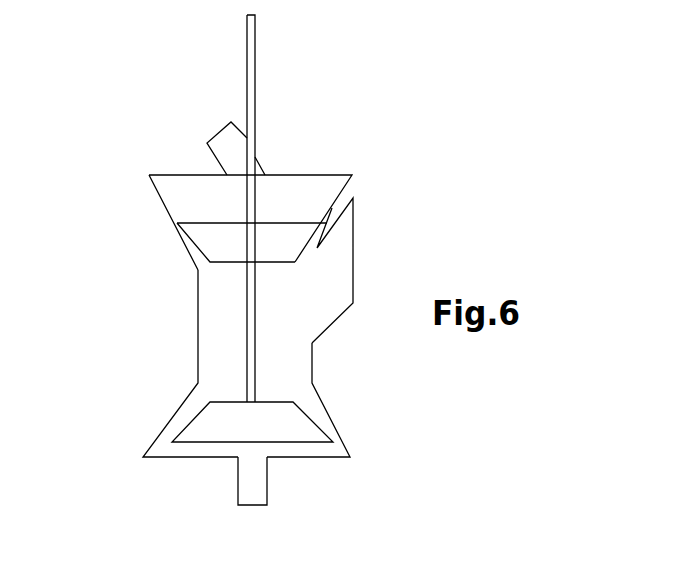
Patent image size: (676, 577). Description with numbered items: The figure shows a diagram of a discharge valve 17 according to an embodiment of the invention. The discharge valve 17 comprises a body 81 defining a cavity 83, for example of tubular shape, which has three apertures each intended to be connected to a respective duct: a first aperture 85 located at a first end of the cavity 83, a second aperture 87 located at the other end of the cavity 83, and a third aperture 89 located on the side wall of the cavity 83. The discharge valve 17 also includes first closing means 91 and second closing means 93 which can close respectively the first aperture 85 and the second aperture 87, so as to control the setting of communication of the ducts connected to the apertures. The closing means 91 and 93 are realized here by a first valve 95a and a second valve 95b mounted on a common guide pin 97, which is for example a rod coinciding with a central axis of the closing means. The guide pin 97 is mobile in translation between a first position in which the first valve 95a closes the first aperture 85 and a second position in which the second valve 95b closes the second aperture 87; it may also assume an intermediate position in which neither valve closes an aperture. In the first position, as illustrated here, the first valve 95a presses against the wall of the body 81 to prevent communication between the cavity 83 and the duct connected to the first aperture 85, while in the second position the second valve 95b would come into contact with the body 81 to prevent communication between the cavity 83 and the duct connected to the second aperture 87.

The discharge valve 17 is at (163, 310).
The body 81 is at (198, 357).
The cavity 83 is at (292, 360).
The first aperture 85 is at (222, 130).
The second aperture 87 is at (255, 505).
The third aperture 89 is at (353, 248).
The first closing means 91 is at (287, 235).
The second closing means 93 is at (208, 423).
The first valve 95a is at (215, 242).
The second valve 95b is at (300, 425).
The guide pin 97 is at (255, 60).